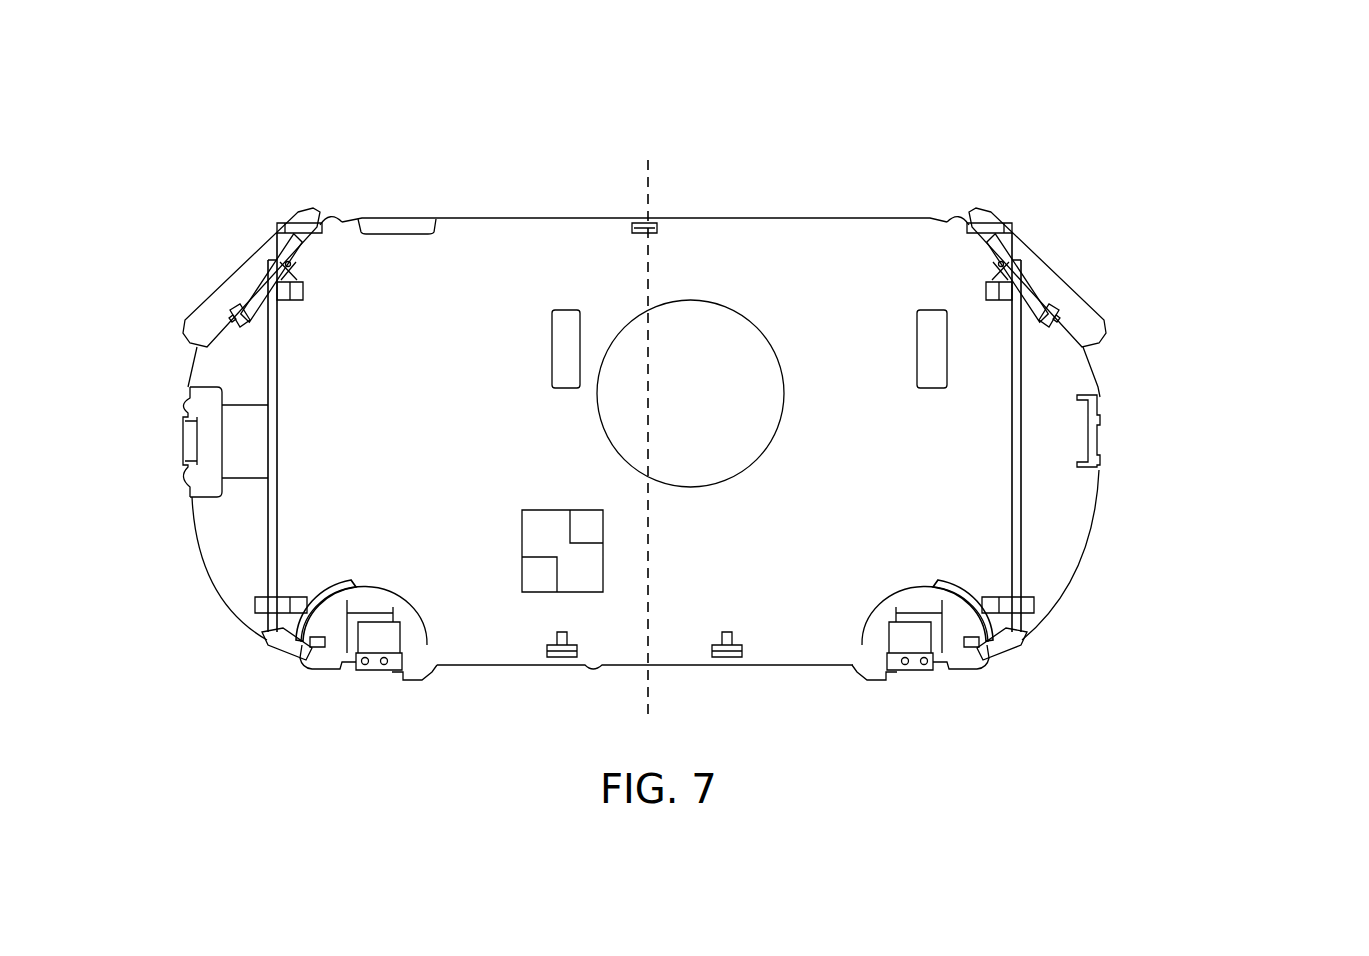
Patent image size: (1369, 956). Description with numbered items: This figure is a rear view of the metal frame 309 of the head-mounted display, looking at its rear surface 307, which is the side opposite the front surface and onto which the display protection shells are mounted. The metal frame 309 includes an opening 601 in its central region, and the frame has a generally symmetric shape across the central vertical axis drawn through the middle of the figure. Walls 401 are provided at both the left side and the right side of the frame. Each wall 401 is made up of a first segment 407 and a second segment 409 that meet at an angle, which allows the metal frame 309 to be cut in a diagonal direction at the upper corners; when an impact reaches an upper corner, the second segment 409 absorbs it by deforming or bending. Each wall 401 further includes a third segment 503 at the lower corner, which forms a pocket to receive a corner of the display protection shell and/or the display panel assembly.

The metal frame 309 is at (534, 155).
The rear surface 307 is at (418, 477).
The opening 601 is at (710, 404).
The wall 401 is at (270, 443).
The second segment 409 is at (1010, 243).
The first segment 407 is at (1023, 432).
The third segment 503 is at (1012, 652).